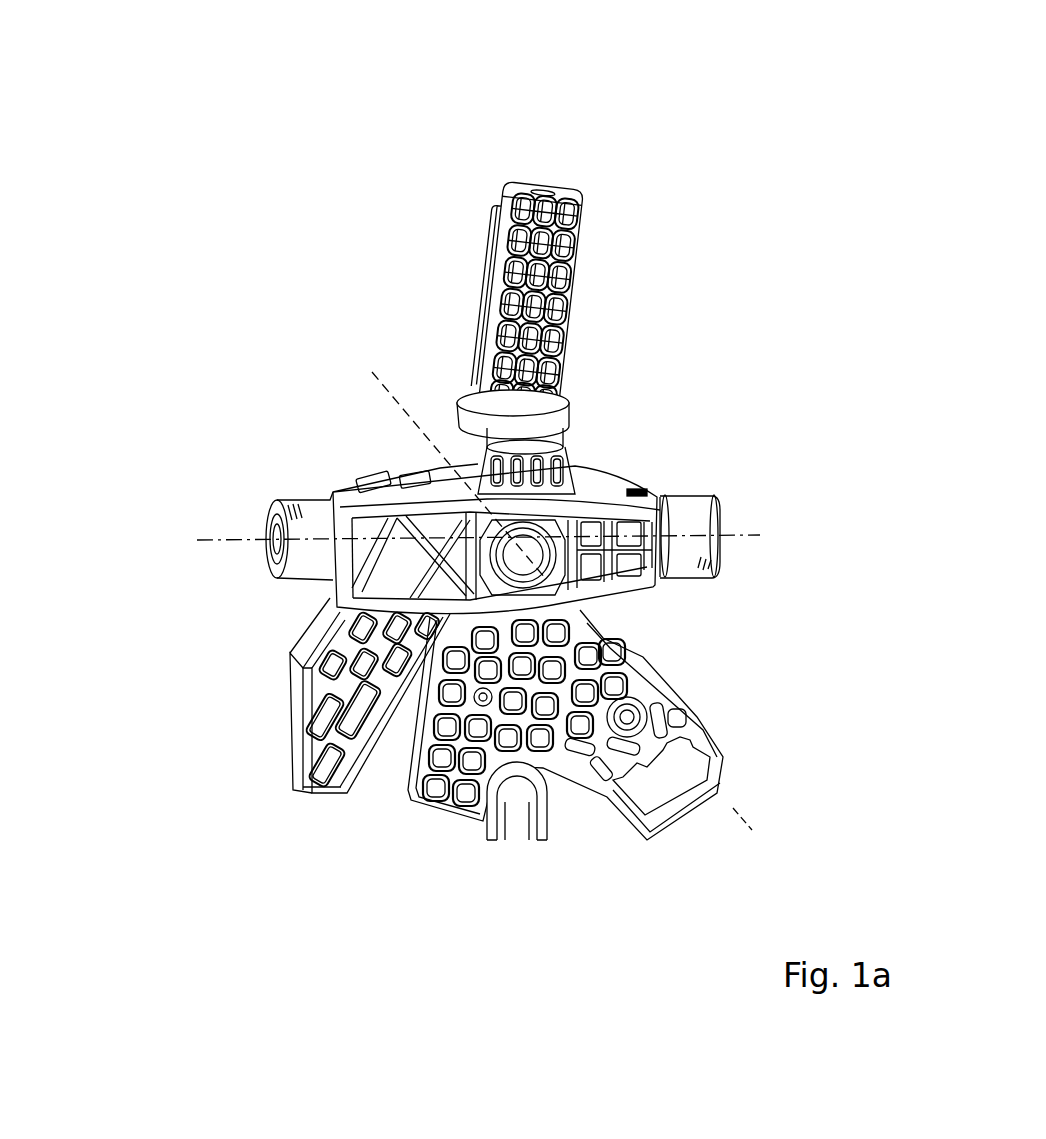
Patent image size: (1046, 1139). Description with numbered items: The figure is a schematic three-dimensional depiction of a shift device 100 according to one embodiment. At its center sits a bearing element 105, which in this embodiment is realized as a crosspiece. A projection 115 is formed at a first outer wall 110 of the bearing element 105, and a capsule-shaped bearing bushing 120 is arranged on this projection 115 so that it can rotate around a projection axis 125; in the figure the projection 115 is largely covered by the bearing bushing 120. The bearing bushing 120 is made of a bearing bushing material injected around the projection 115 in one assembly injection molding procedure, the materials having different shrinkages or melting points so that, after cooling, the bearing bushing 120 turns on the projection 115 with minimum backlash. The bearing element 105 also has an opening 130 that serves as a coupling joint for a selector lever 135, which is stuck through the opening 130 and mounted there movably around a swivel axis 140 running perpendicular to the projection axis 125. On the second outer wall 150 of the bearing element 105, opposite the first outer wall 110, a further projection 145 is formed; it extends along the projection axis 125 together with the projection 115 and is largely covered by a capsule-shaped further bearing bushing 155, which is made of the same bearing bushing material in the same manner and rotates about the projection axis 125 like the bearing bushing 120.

The shift device 100 is at (312, 240).
The bearing element 105 is at (303, 623).
The first outer wall 110 is at (323, 580).
The projection 115 is at (296, 488).
The bearing bushing 120 is at (270, 520).
The projection axis 125 is at (217, 541).
The opening 130 is at (493, 510).
The selector lever 135 is at (500, 213).
The swivel axis 140 is at (730, 800).
The further projection 145 is at (683, 490).
The second outer wall 150 is at (640, 590).
The further bearing bushing 155 is at (718, 517).